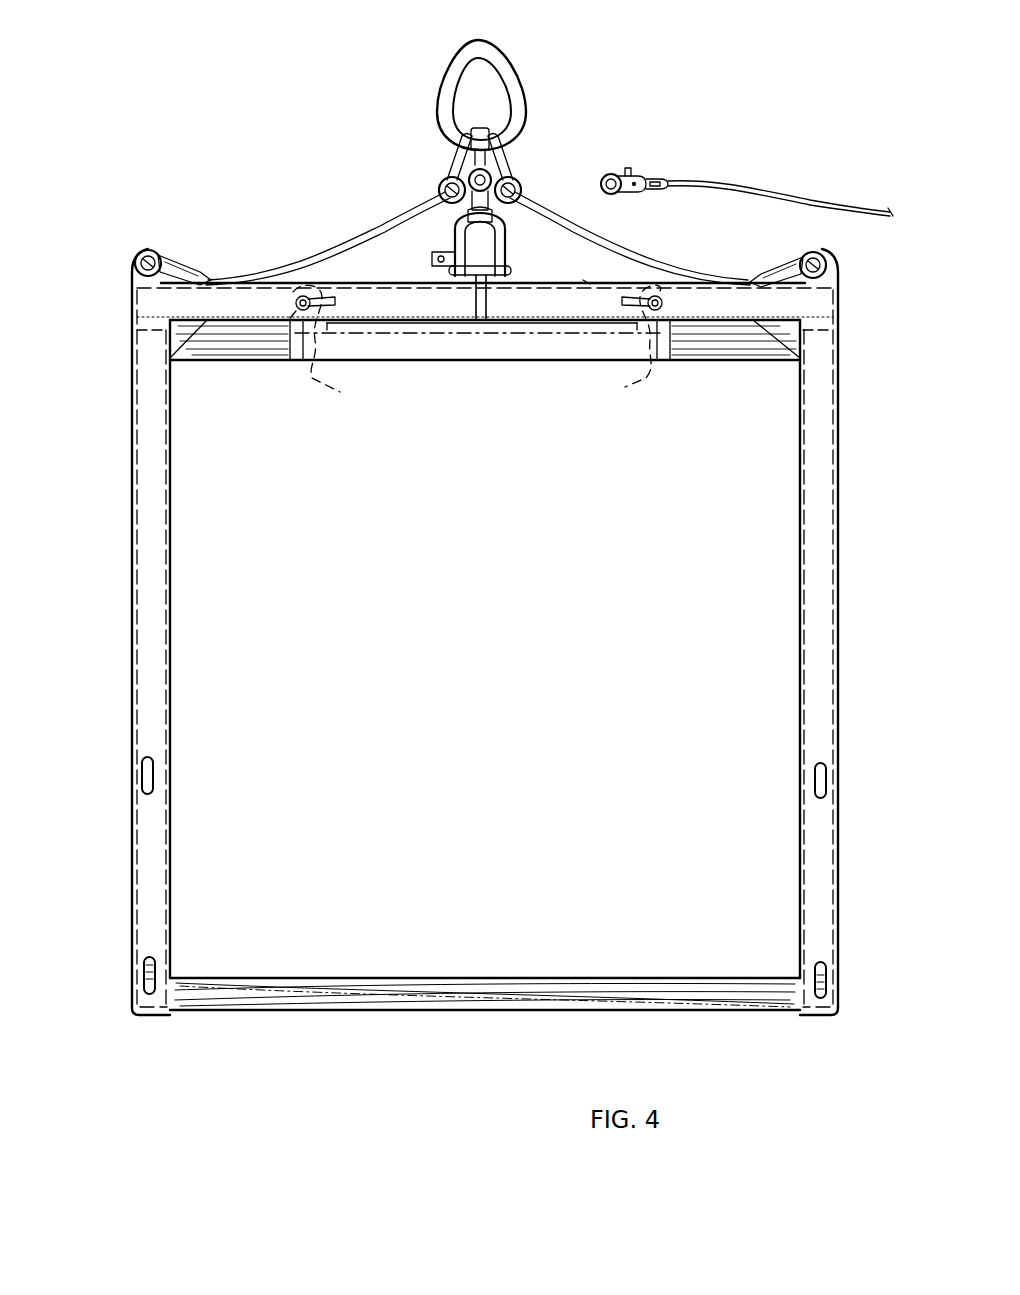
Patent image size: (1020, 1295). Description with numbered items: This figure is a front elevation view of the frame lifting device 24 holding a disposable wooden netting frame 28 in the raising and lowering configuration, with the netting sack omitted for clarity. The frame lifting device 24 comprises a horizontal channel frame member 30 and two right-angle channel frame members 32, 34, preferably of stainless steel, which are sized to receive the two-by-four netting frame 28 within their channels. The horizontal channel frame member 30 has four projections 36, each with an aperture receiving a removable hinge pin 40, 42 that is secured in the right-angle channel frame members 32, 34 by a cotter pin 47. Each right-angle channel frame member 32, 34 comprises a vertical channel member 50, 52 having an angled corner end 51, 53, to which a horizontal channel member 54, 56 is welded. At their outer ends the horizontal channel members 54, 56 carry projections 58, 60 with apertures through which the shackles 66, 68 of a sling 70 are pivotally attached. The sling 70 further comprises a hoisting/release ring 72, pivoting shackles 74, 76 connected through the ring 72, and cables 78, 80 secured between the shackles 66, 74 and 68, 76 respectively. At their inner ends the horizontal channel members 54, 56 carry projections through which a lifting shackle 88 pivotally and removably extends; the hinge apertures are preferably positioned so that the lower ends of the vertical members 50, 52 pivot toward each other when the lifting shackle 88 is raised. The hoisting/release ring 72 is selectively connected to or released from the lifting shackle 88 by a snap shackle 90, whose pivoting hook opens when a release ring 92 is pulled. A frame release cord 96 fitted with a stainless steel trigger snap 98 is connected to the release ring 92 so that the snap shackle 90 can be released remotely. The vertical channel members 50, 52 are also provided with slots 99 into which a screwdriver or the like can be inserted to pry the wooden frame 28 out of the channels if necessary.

The frame lifting device 24 is at (130, 318).
The disposable wooden netting frame 28 is at (420, 1014).
The horizontal channel frame member 30 is at (492, 348).
The right-angle channel frame member 32 is at (176, 575).
The right-angle channel frame member 34 is at (795, 580).
The projections 36 is at (477, 345).
The removable hinge pin 40 is at (298, 296).
The removable hinge pin 42 is at (672, 298).
The cotter pin 47 is at (330, 300).
The vertical channel member 50 is at (152, 652).
The angled corner end 51 is at (185, 342).
The vertical channel member 52 is at (815, 683).
The angled corner end 53 is at (790, 350).
The horizontal channel member 54 is at (360, 279).
The horizontal channel member 56 is at (587, 282).
The projection 58 is at (142, 248).
The projection 60 is at (833, 254).
The shackle 66 is at (184, 262).
The shackle 68 is at (780, 263).
The sling 70 is at (607, 137).
The hoisting/release ring 72 is at (441, 56).
The pivoting shackle 74 is at (462, 135).
The pivoting shackle 76 is at (500, 136).
The cable 78 is at (378, 232).
The cable 80 is at (603, 247).
The lifting shackle 88 is at (450, 223).
The snap shackle 90 is at (482, 122).
The release ring 92 is at (470, 172).
The frame release cord 96 is at (763, 190).
The trigger snap 98 is at (633, 175).
The slots 99 is at (147, 773).